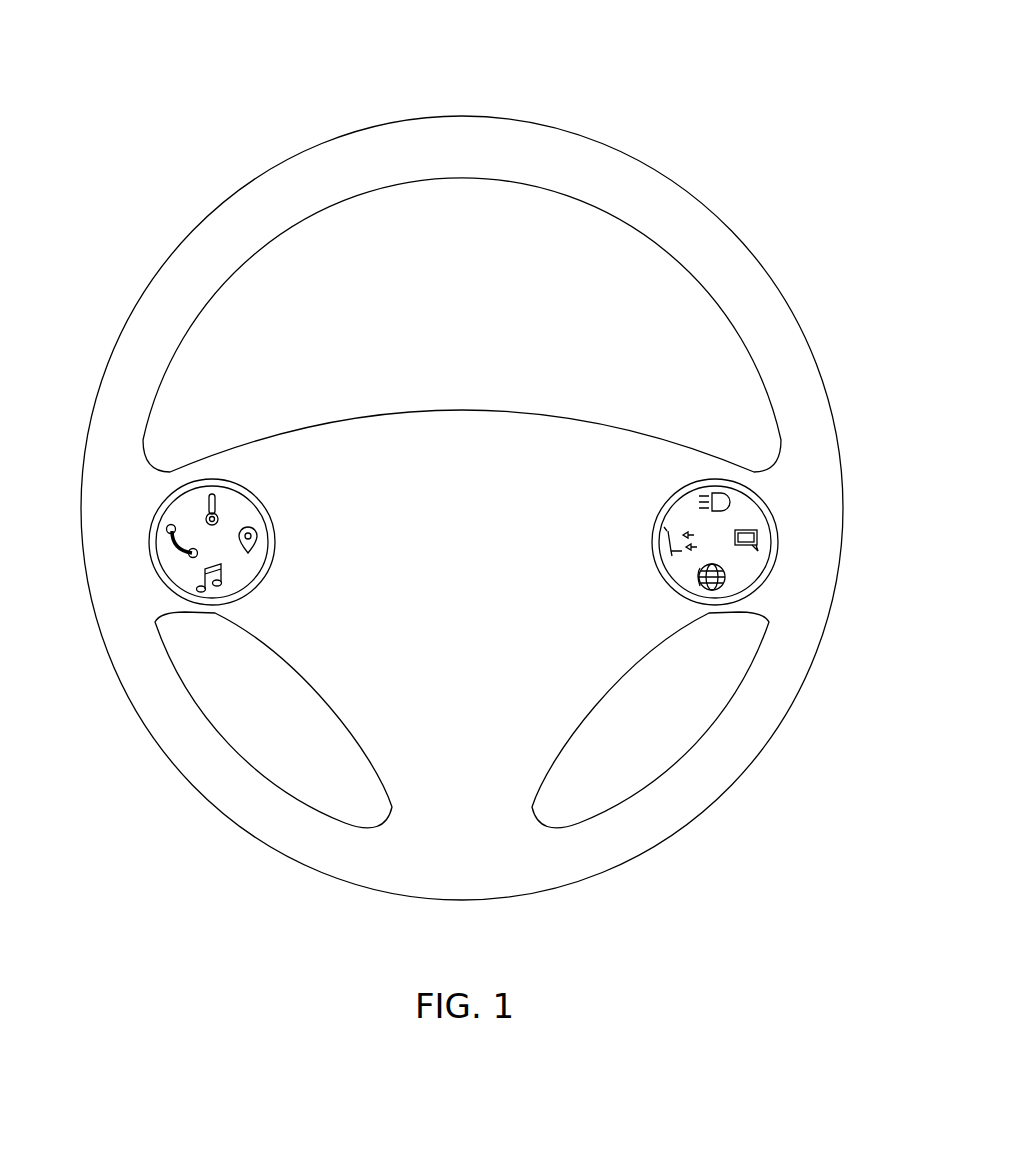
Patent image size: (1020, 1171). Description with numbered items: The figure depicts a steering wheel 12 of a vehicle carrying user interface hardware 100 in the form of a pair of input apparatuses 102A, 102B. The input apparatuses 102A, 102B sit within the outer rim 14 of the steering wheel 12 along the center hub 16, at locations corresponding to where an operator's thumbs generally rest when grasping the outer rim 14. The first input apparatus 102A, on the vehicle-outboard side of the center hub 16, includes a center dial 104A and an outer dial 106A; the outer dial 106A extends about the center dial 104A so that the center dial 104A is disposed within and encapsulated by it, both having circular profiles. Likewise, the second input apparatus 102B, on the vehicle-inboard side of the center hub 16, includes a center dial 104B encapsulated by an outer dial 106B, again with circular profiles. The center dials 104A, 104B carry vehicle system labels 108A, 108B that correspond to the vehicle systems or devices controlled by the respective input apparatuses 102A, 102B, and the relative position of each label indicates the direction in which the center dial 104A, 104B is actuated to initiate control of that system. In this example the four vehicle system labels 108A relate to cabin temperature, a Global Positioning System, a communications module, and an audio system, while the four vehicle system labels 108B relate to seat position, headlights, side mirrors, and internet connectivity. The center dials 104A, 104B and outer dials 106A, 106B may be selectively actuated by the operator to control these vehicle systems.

The steering wheel 12 is at (462, 473).
The outer rim 14 is at (302, 152).
The center hub 16 is at (474, 574).
The user interface hardware 100 is at (462, 562).
The first input apparatus 102A is at (273, 589).
The second input apparatus 102B is at (650, 589).
The center dial 104A is at (245, 515).
The center dial 104B is at (676, 516).
The outer dial 106A is at (160, 573).
The outer dial 106B is at (765, 573).
The vehicle system labels 108A is at (197, 507).
The vehicle system labels 108B is at (727, 504).